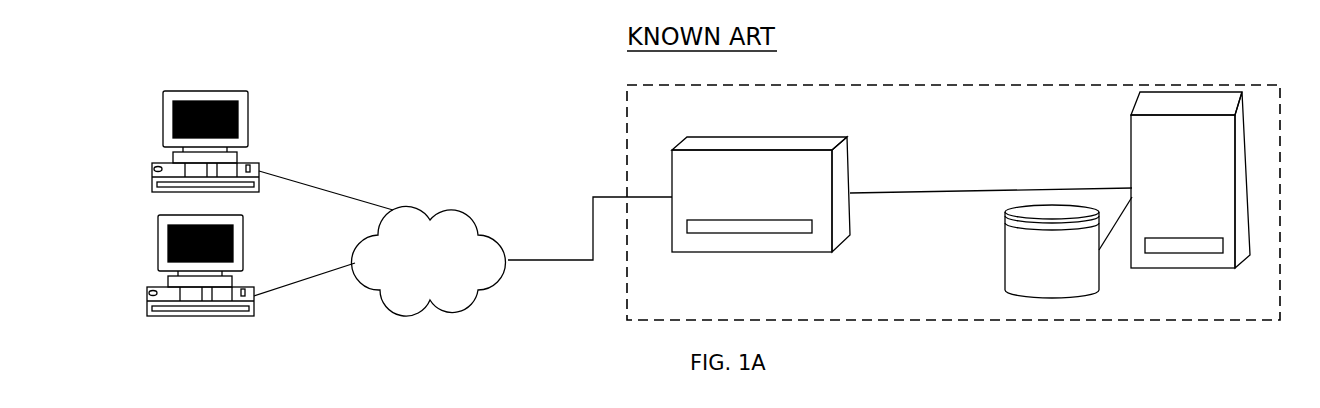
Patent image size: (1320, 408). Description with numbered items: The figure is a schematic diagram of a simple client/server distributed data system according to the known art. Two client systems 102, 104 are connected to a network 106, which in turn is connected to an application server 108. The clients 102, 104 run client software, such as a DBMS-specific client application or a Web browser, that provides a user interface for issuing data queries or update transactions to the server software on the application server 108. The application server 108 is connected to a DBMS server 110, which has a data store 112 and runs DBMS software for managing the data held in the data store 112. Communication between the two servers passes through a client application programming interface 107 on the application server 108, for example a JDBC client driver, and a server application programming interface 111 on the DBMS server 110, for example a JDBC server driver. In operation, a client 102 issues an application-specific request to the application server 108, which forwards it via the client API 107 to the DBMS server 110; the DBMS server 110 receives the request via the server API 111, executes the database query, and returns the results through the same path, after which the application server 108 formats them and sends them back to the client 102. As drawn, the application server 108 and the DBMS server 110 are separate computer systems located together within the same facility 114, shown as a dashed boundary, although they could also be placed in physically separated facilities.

The client system 102 is at (244, 140).
The client system 104 is at (232, 272).
The network 106 is at (452, 236).
The client application programming interface 107 is at (760, 234).
The application server 108 is at (784, 208).
The DBMS server 110 is at (1162, 196).
The server application programming interface 111 is at (1218, 253).
The data store 112 is at (1013, 251).
The facility 114 is at (914, 198).